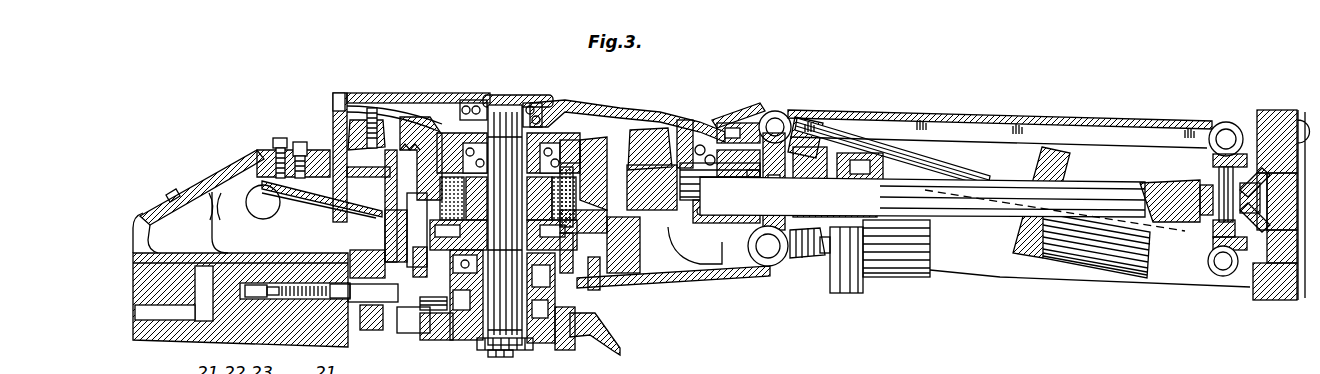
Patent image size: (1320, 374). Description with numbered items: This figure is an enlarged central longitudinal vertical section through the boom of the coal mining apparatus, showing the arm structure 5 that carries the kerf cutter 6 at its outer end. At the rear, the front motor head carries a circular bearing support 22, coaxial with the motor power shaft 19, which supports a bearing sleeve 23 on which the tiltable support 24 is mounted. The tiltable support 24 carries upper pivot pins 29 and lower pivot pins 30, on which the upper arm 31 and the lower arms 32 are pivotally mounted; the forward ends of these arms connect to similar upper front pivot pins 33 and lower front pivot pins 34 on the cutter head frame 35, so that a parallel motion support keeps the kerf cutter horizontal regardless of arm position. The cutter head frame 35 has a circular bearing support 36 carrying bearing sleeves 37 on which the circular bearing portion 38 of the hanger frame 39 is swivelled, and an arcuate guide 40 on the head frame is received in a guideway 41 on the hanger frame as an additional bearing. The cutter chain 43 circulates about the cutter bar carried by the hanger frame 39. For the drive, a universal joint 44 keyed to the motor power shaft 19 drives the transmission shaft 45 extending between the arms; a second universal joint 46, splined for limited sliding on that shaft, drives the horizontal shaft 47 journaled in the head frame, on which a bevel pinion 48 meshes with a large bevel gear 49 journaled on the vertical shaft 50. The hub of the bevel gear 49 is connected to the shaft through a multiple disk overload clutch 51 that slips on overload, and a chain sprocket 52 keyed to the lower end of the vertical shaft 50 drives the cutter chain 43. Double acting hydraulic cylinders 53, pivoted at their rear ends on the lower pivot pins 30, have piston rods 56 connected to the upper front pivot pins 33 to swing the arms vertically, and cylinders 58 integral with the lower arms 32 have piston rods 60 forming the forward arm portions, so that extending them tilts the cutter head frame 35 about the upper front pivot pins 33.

The arm structure 5 is at (1122, 113).
The kerf cutter 6 is at (163, 346).
The motor power shaft 19 is at (1252, 285).
The circular bearing support 22 is at (1257, 116).
The bearing sleeve 23 is at (1264, 120).
The tiltable support 24 is at (1277, 105).
The upper pivot pins 29 is at (1224, 137).
The lower pivot pins 30 is at (1224, 256).
The upper arm 31 is at (1148, 116).
The lower arms 32 is at (1018, 266).
The upper front pivot pins 33 is at (775, 118).
The lower front pivot pins 34 is at (777, 252).
The cutter head frame 35 is at (709, 118).
The circular bearing support 36 is at (608, 257).
The bearing sleeves 37 is at (384, 237).
The circular bearing portion 38 is at (668, 269).
The hanger frame 39 is at (148, 208).
The arcuate guide 40 is at (296, 158).
The guideway 41 is at (283, 160).
The cutter chain 43 is at (597, 348).
The universal joint 44 is at (1193, 254).
The transmission shaft 45 is at (977, 182).
The universal joint 46 is at (790, 148).
The horizontal shaft 47 is at (690, 180).
The bevel pinion 48 is at (650, 173).
The bevel gear 49 is at (384, 127).
The vertical shaft 50 is at (507, 130).
The overload clutch 51 is at (420, 197).
The chain sprocket 52 is at (558, 338).
The hydraulic cylinders 53 is at (1120, 258).
The piston rods 56 is at (922, 162).
The cylinders 58 is at (913, 279).
The piston rods 60 is at (822, 254).